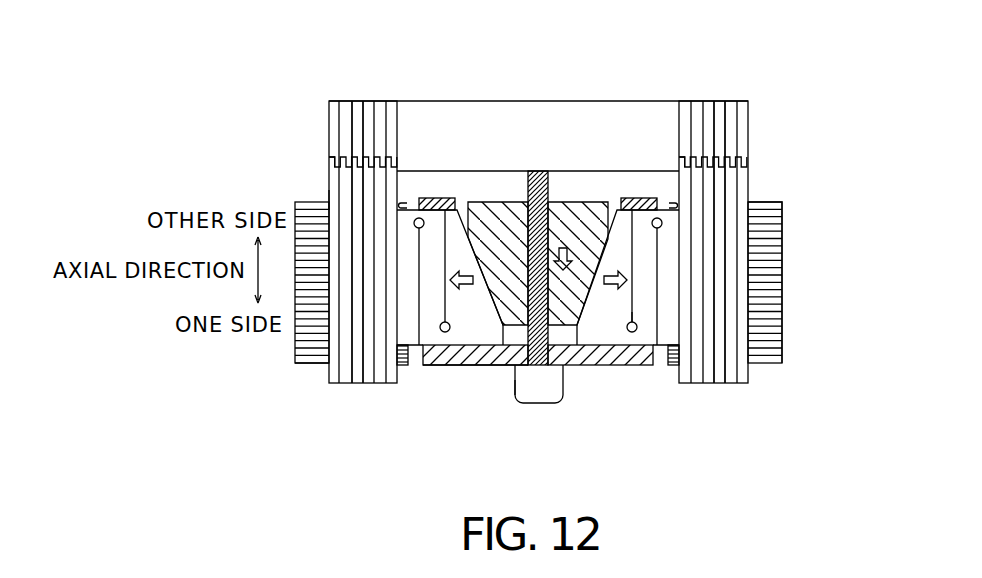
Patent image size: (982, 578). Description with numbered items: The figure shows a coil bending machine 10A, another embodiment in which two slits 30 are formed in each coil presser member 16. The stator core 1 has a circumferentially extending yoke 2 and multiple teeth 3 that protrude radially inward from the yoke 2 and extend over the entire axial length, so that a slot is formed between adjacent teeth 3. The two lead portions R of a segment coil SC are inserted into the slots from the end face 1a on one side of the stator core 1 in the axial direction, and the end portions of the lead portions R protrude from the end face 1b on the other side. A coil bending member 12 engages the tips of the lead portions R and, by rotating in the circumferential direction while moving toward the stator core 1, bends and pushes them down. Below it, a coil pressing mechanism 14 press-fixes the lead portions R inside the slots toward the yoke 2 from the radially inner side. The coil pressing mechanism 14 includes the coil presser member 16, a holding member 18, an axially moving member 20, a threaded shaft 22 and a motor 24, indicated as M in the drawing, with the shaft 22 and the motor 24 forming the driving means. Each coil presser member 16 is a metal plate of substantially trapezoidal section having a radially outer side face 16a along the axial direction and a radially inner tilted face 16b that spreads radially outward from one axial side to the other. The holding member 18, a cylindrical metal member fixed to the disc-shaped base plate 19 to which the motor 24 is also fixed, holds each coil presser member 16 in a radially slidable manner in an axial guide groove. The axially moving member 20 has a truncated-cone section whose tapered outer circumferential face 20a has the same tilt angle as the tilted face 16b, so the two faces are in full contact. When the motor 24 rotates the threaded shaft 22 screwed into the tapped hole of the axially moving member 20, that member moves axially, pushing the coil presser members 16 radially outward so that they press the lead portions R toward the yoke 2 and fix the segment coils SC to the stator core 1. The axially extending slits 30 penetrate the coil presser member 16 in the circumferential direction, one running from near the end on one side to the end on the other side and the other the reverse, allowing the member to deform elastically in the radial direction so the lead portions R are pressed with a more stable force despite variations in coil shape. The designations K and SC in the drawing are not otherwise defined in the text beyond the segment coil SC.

The coil bending machine 10A is at (702, 66).
The coil bending member 12 is at (552, 100).
The casing K is at (348, 383).
The segment coil SC is at (363, 391).
The lead portion R is at (329, 172).
The stator core 1 is at (792, 195).
The end face on one side 1a is at (303, 363).
The end face on the other side 1b is at (329, 200).
The yoke 2 is at (295, 205).
The teeth 3 is at (402, 368).
The coil pressing mechanism 14 is at (455, 376).
The coil presser member 16 is at (413, 347).
The side face 16a is at (387, 232).
The tilted face 16b is at (480, 250).
The holding member 18 is at (467, 198).
The base plate 19 is at (588, 365).
The axially moving member 20 is at (588, 200).
The outer circumferential face 20a is at (492, 365).
The threaded shaft 22 is at (550, 200).
The motor 24 is at (538, 405).
The slit 30 is at (630, 312).
The motor M is at (532, 385).